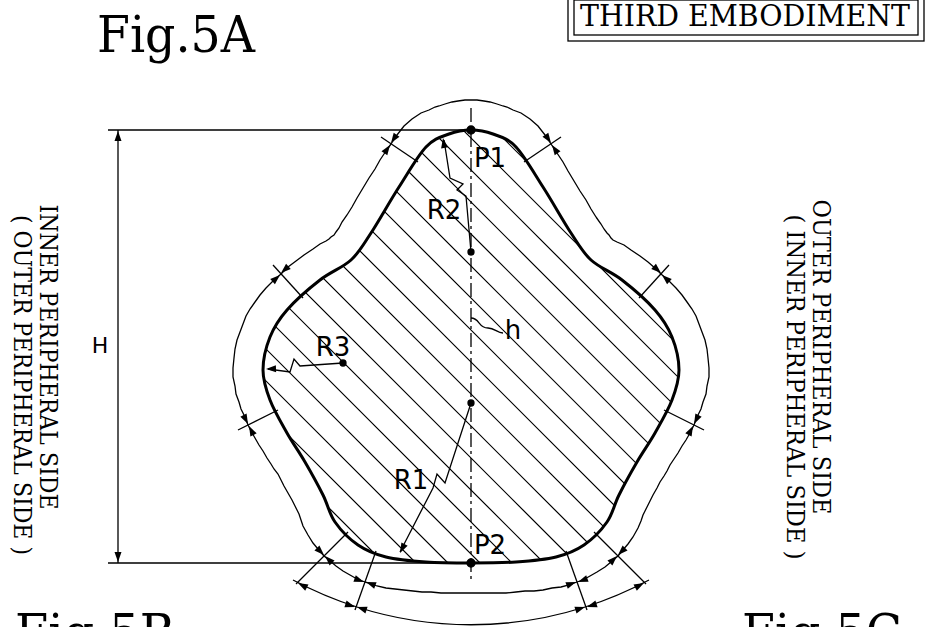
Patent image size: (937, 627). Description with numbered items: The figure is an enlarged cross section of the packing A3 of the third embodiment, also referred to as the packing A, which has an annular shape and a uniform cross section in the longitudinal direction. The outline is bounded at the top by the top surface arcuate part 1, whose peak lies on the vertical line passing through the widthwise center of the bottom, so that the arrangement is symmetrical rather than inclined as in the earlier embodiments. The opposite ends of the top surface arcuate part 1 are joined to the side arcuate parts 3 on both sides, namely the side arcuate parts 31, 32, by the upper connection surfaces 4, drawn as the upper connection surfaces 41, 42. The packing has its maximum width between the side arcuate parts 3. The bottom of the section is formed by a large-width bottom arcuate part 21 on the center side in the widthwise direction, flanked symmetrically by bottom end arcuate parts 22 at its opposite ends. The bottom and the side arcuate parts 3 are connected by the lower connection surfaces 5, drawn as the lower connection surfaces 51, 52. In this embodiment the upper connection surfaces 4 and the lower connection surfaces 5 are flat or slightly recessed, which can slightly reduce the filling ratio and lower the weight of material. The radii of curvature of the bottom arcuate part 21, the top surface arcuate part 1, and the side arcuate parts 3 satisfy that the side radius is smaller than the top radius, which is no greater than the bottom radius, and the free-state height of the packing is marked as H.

The top surface arcuate part 1 is at (468, 333).
The upper connection surfaces 4 is at (471, 221).
The upper connection surface 41 is at (330, 221).
The upper connection surface 42 is at (634, 257).
The side arcuate parts 3 is at (469, 355).
The side arcuate part 31 is at (225, 355).
The side arcuate part 32 is at (715, 355).
The lower connection surfaces 5 is at (465, 504).
The lower connection surface 51 is at (284, 504).
The lower connection surface 52 is at (652, 504).
The bottom arcuate part 21 is at (470, 603).
The bottom end arcuate parts 22 is at (471, 582).
The packing A is at (554, 88).
The packing A3 is at (567, 218).